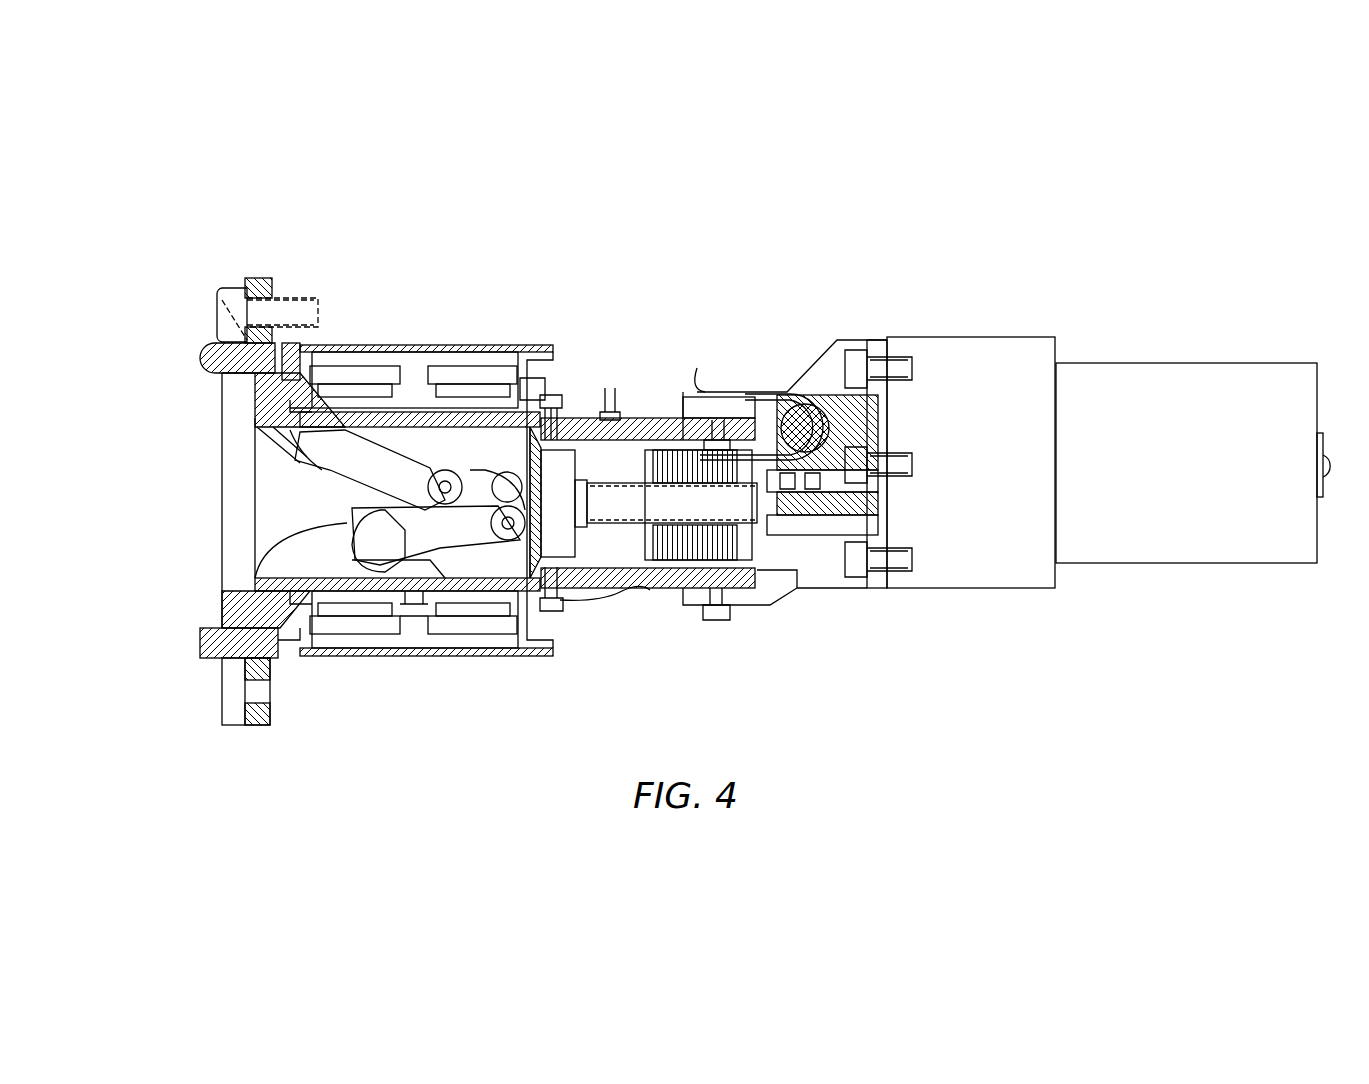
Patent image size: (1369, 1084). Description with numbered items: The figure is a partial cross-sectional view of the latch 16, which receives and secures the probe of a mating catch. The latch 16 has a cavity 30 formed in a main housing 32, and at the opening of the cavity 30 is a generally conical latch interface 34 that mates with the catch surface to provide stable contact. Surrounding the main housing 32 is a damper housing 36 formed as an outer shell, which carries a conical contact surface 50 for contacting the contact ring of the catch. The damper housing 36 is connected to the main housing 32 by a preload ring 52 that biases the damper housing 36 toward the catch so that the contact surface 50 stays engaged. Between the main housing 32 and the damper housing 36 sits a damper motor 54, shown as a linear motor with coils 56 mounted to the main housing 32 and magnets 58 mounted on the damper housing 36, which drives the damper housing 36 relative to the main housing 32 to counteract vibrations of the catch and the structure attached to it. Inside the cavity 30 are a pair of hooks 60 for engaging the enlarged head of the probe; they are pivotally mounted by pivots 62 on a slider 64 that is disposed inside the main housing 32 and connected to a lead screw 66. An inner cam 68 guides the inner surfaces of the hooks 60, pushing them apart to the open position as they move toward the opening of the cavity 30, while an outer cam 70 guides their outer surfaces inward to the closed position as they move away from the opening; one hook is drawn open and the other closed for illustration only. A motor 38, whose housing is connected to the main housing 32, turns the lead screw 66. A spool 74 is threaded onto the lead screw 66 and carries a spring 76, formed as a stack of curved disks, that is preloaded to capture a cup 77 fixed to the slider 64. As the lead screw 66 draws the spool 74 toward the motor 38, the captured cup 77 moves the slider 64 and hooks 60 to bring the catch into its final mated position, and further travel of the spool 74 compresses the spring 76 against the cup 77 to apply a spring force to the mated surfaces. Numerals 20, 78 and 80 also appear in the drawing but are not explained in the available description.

The latch 16 is at (998, 222).
The mounting bolt 20 is at (297, 296).
The cavity 30 is at (248, 517).
The main housing 32 is at (630, 418).
The latch interface 34 is at (243, 593).
The damper housing 36 is at (365, 353).
The motor 38 is at (993, 567).
The conical contact surface 50 is at (212, 374).
The preload ring 52 is at (525, 392).
The damper motor 54 is at (475, 230).
The coils 56 is at (353, 373).
The magnets 58 is at (342, 388).
The hooks 60 is at (357, 530).
The pivots 62 is at (493, 525).
The slider 64 is at (678, 440).
The lead screw 66 is at (613, 522).
The inner cam 68 is at (413, 505).
The outer cam 70 is at (378, 570).
The spool 74 is at (744, 468).
The spring 76 is at (652, 543).
The cup 77 is at (745, 462).
The coil spring 78 is at (655, 472).
The motor mount plate 80 is at (985, 338).